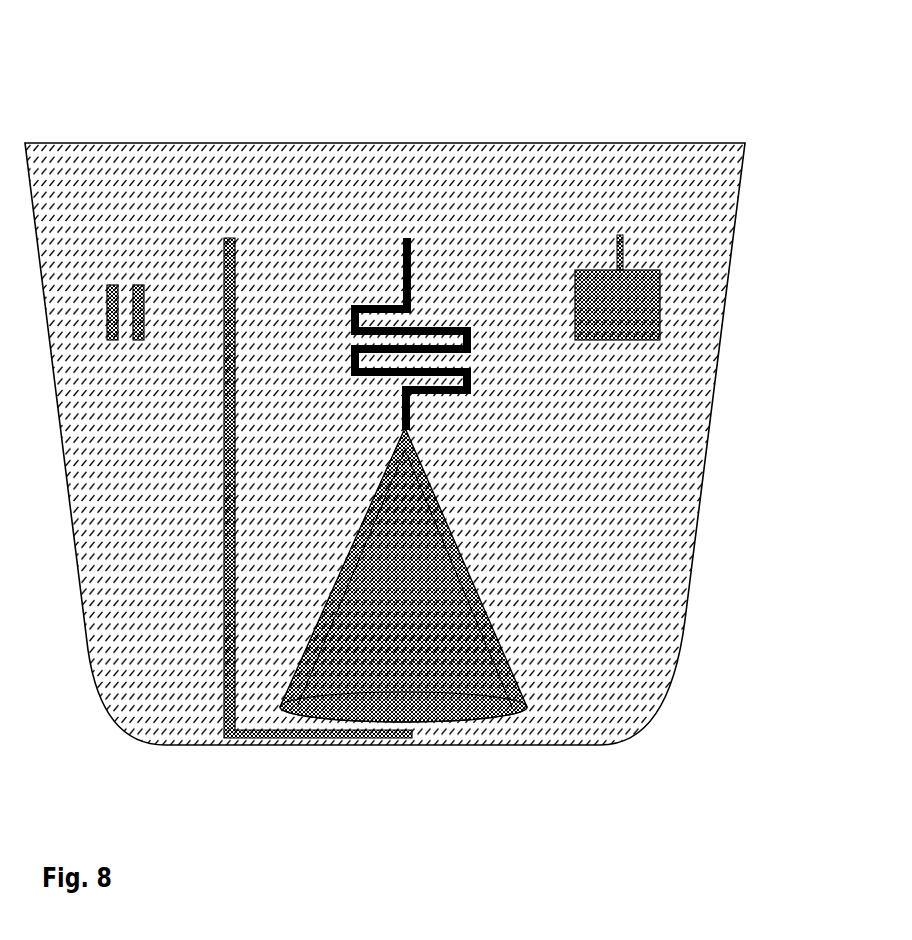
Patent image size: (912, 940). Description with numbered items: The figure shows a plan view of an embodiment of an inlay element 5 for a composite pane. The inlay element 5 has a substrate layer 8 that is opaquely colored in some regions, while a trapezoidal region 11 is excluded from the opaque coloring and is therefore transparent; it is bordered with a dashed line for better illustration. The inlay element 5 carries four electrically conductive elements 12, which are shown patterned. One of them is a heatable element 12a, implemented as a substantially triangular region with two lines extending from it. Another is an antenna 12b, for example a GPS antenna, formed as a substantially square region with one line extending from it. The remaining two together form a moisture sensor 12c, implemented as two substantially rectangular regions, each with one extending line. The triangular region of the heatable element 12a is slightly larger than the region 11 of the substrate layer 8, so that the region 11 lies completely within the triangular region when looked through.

The inlay element 5 is at (70, 116).
The substrate layer 8 is at (428, 165).
The region excluded from the opaque coloring 11 is at (437, 673).
The electrically conductive elements 12 is at (457, 463).
The heatable element 12a is at (358, 727).
The antenna 12b is at (655, 335).
The moisture sensor 12c is at (113, 305).